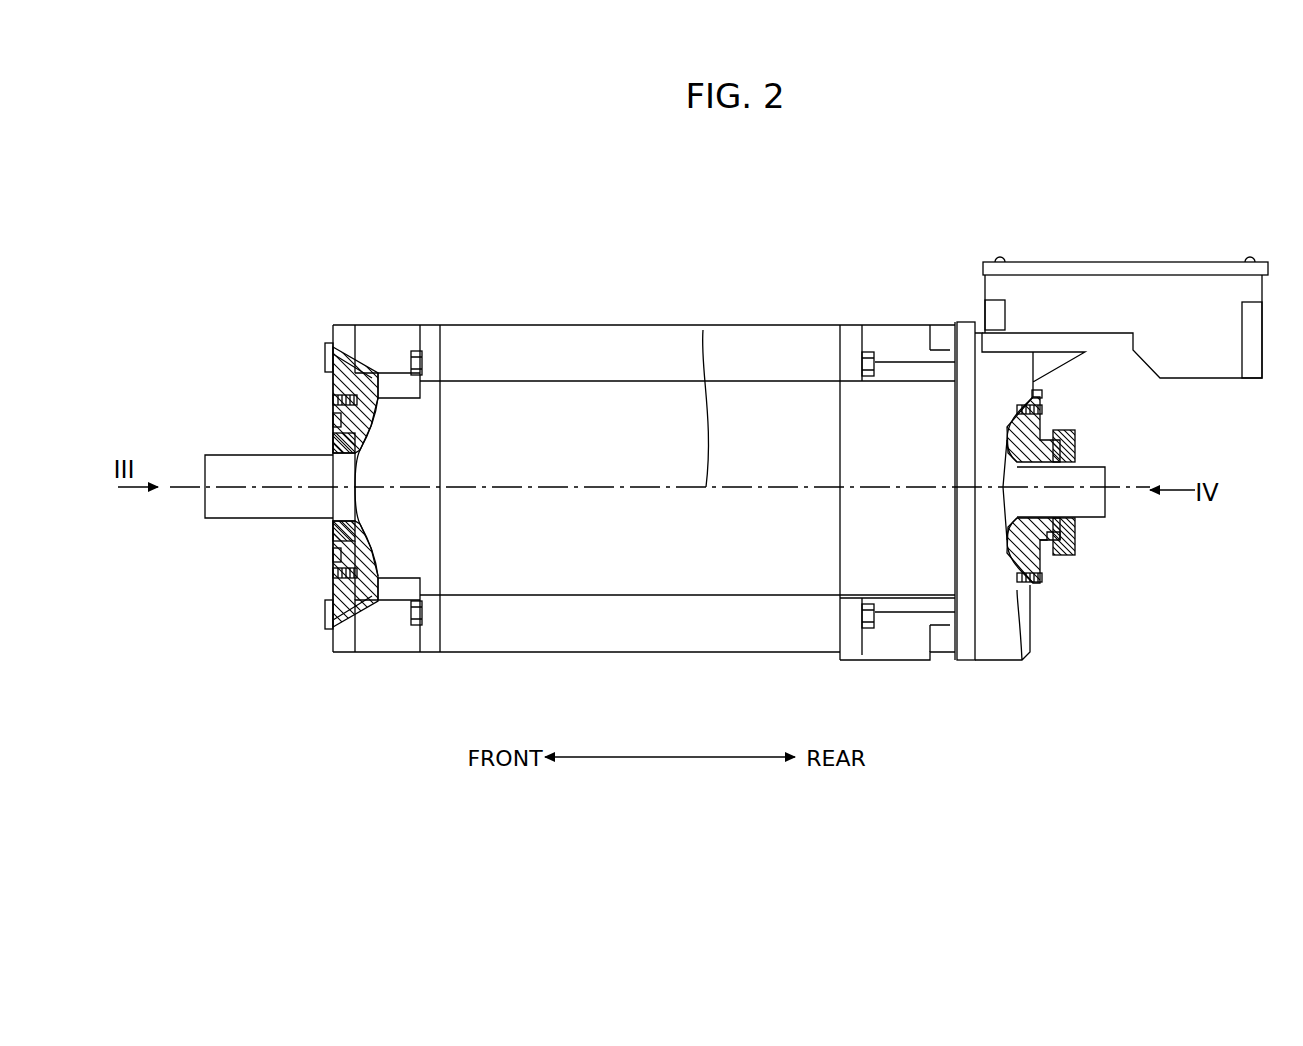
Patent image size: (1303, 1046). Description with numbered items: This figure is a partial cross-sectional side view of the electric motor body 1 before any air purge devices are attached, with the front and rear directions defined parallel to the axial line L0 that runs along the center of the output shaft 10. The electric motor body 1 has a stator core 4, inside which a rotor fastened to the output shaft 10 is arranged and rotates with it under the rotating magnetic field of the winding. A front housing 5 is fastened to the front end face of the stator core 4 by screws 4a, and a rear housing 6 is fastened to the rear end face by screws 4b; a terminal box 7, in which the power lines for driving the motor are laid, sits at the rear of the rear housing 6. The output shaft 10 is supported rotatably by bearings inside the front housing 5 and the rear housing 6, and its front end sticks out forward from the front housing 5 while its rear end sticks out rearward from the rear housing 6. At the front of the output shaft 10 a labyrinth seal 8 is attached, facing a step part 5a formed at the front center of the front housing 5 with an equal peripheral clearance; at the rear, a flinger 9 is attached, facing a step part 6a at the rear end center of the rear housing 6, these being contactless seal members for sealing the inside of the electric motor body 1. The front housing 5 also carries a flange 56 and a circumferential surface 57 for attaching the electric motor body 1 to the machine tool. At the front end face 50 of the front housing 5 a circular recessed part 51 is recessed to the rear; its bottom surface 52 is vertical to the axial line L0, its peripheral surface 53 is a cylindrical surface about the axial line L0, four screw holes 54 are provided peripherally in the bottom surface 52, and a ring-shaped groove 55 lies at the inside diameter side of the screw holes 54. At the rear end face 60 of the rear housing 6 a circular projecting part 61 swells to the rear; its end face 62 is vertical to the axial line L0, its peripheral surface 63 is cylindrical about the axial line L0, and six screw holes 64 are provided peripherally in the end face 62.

The electric motor body 1 is at (762, 255).
The stator core 4 is at (628, 324).
The screws 4a is at (415, 350).
The screws 4b is at (872, 350).
The front housing 5 is at (383, 324).
The step part 5a is at (368, 560).
The rear housing 6 is at (918, 330).
The step part 6a is at (1039, 540).
The terminal box 7 is at (1118, 262).
The labyrinth seal 8 is at (333, 532).
The flinger 9 is at (1068, 556).
The output shaft 10 is at (245, 520).
The axial line L0 is at (703, 330).
The front end face 50 is at (328, 348).
The recessed part 51 is at (333, 590).
The bottom surface 52 is at (333, 394).
The peripheral surface 53 is at (326, 376).
The screw holes 54 is at (347, 578).
The ring-shaped groove 55 is at (334, 420).
The flange 56 is at (333, 652).
The circumferential surface 57 is at (326, 632).
The rear end face 60 is at (1037, 648).
The projecting part 61 is at (1042, 436).
The end face 62 is at (1043, 414).
The peripheral surface 63 is at (1042, 398).
The screw holes 64 is at (1025, 582).